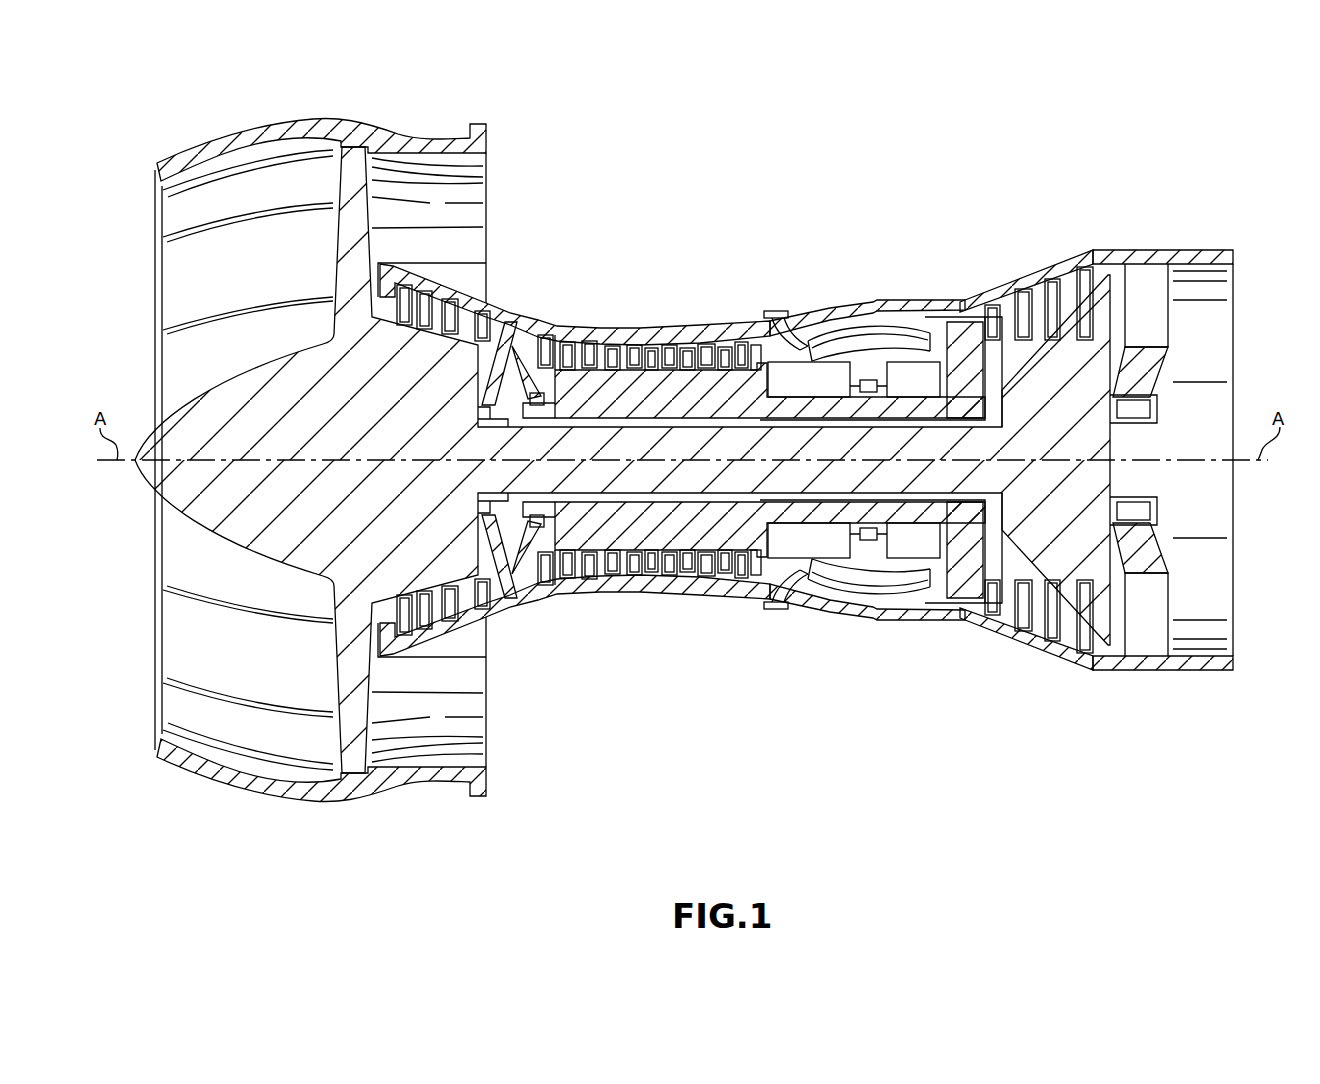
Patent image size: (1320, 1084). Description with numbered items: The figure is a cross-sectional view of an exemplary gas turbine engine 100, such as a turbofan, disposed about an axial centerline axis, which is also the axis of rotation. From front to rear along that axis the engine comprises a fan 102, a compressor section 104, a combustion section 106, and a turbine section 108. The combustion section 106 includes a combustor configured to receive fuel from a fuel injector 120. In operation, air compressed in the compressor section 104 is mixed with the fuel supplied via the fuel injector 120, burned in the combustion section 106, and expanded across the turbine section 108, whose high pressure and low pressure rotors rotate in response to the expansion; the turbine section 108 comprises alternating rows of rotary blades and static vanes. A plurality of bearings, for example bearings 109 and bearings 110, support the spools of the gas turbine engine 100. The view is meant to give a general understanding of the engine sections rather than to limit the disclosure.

The gas turbine engine 100 is at (961, 162).
The fan 102 is at (373, 197).
The compressor section 104 is at (767, 806).
The combustion section 106 is at (958, 636).
The turbine section 108 is at (1123, 686).
The bearings 109 is at (1152, 406).
The bearings 110 is at (533, 392).
The fuel injector 120 is at (762, 355).